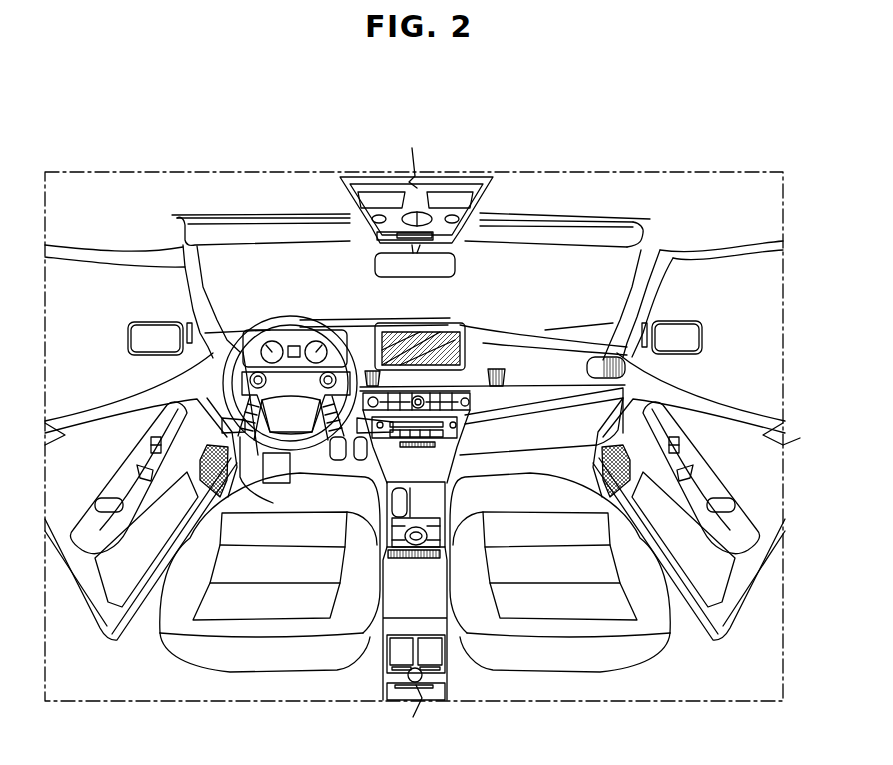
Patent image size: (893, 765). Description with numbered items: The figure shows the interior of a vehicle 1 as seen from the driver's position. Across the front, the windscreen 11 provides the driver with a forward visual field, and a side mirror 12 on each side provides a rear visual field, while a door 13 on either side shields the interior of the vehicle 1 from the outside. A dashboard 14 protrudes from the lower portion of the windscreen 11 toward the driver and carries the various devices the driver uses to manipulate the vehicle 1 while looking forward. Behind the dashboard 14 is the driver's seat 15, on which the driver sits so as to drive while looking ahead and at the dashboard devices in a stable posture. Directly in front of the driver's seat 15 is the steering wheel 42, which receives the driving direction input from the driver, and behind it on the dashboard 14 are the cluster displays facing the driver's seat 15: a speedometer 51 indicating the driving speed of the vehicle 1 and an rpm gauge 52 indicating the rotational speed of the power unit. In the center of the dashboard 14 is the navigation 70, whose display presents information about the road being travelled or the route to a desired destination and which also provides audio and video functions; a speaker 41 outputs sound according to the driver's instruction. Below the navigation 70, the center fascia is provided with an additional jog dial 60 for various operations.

The vehicle 1 is at (137, 150).
The windscreen 11 is at (247, 257).
The side mirror 12 is at (130, 342).
The door 13 is at (70, 497).
The dashboard 14 is at (560, 357).
The driver's seat 15 is at (263, 660).
The speaker 41 is at (200, 463).
The steering wheel 42 is at (350, 357).
The speedometer 51 is at (256, 329).
The rpm gauge 52 is at (300, 358).
The jog dial 60 is at (417, 518).
The navigation 70 is at (452, 326).